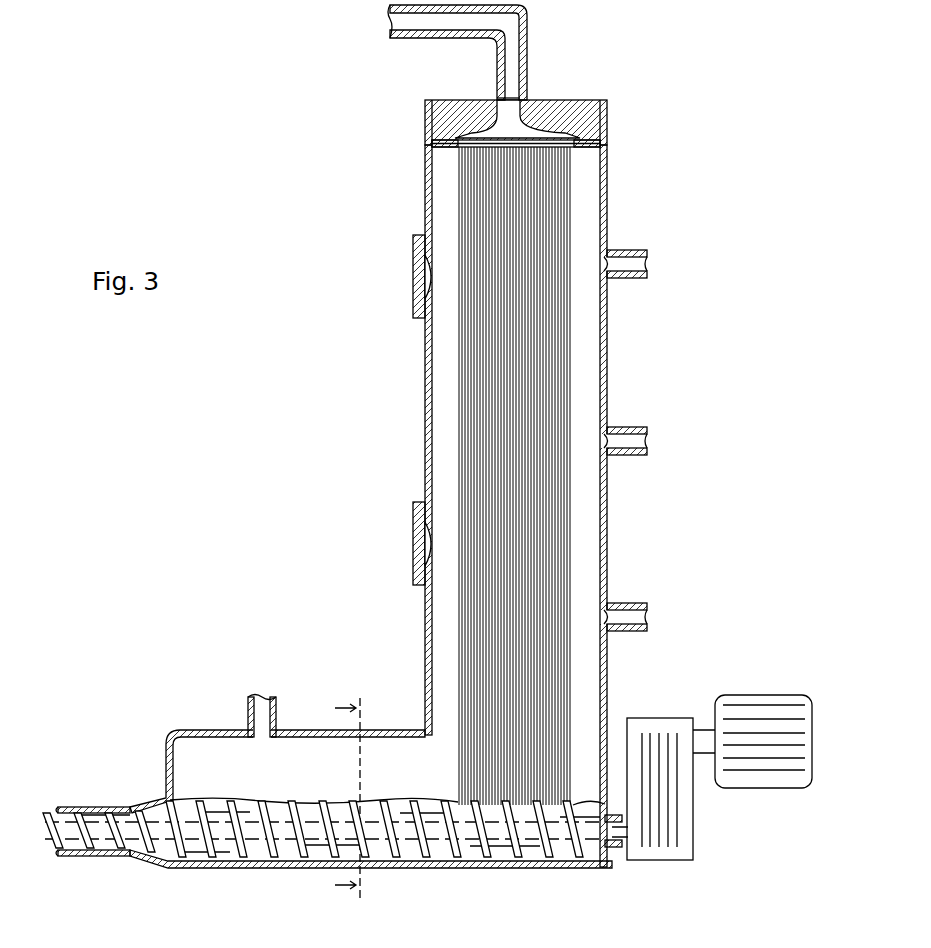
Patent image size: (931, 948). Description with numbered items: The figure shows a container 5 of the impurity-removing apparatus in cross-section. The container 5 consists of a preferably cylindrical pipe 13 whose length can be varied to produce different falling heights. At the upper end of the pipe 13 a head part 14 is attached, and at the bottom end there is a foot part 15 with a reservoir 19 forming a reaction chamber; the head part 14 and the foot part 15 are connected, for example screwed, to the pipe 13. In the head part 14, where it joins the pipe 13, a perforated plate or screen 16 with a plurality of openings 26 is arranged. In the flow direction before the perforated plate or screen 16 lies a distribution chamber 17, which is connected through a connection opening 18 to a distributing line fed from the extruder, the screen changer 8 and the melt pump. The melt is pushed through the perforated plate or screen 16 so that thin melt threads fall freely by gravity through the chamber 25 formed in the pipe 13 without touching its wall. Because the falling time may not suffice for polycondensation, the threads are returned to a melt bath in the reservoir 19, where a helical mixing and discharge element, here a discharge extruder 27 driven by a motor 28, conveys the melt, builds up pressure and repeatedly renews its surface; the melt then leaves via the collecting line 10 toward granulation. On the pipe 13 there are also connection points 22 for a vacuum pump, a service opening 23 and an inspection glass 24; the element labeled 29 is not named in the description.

The container 5 is at (345, 396).
The screen changer 8 is at (513, 60).
The collecting line 10 is at (98, 805).
The cylindrical pipe 13 is at (610, 352).
The head part 14 is at (447, 115).
The foot part 15 is at (402, 728).
The perforated plate or screen 16 is at (580, 143).
The distribution chamber 17 is at (512, 130).
The connection opening 18 is at (500, 97).
The reservoir 19 is at (435, 797).
The connection points 22 is at (630, 264).
The assembly or service opening 23 is at (430, 278).
The inspection glass 24 is at (430, 542).
The chamber 25 is at (582, 518).
The openings 26 is at (470, 145).
The discharge extruder 27 is at (262, 858).
The motor 28 is at (757, 775).
The screw shaft 29 is at (562, 833).